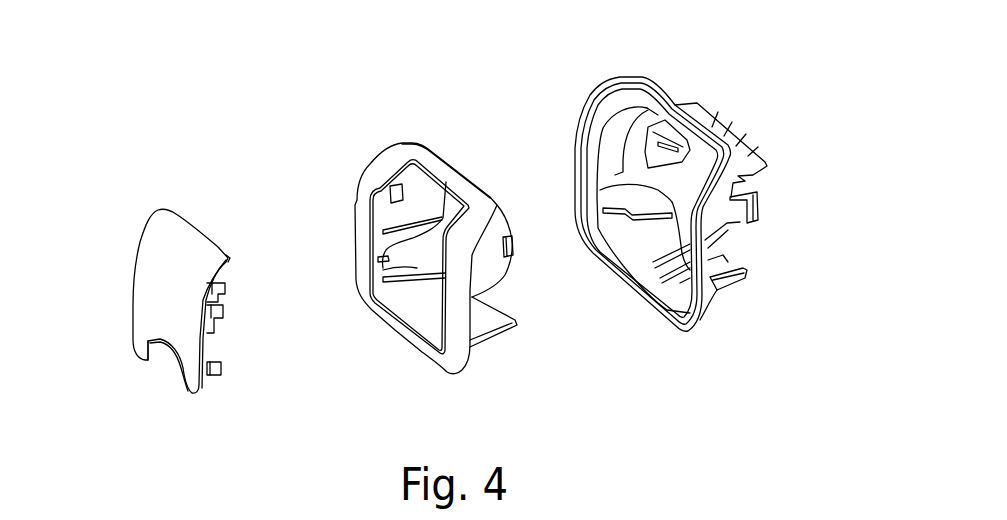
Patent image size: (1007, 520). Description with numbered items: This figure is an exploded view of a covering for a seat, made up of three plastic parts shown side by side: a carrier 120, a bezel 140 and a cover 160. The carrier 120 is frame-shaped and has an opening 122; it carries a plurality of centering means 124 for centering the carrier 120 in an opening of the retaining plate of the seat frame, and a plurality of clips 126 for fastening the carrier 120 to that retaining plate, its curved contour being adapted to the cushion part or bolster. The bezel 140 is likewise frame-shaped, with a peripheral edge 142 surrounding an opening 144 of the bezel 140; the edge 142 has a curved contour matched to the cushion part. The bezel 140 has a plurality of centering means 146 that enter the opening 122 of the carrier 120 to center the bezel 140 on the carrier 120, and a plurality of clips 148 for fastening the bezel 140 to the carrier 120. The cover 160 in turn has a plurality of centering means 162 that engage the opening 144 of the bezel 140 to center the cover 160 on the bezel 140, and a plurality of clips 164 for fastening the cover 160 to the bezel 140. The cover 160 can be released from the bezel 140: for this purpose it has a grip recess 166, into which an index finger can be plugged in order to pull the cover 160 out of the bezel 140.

The carrier 120 is at (648, 110).
The opening 122 is at (600, 190).
The centering means 124 is at (747, 280).
The clips 126 is at (760, 212).
The bezel 140 is at (395, 157).
The peripheral edge 142 is at (423, 162).
The opening 144 is at (385, 274).
The centering means 146 is at (477, 340).
The clips 148 is at (510, 250).
The cover 160 is at (163, 247).
The centering means 162 is at (222, 337).
The clips 164 is at (222, 368).
The grip recess 166 is at (163, 353).